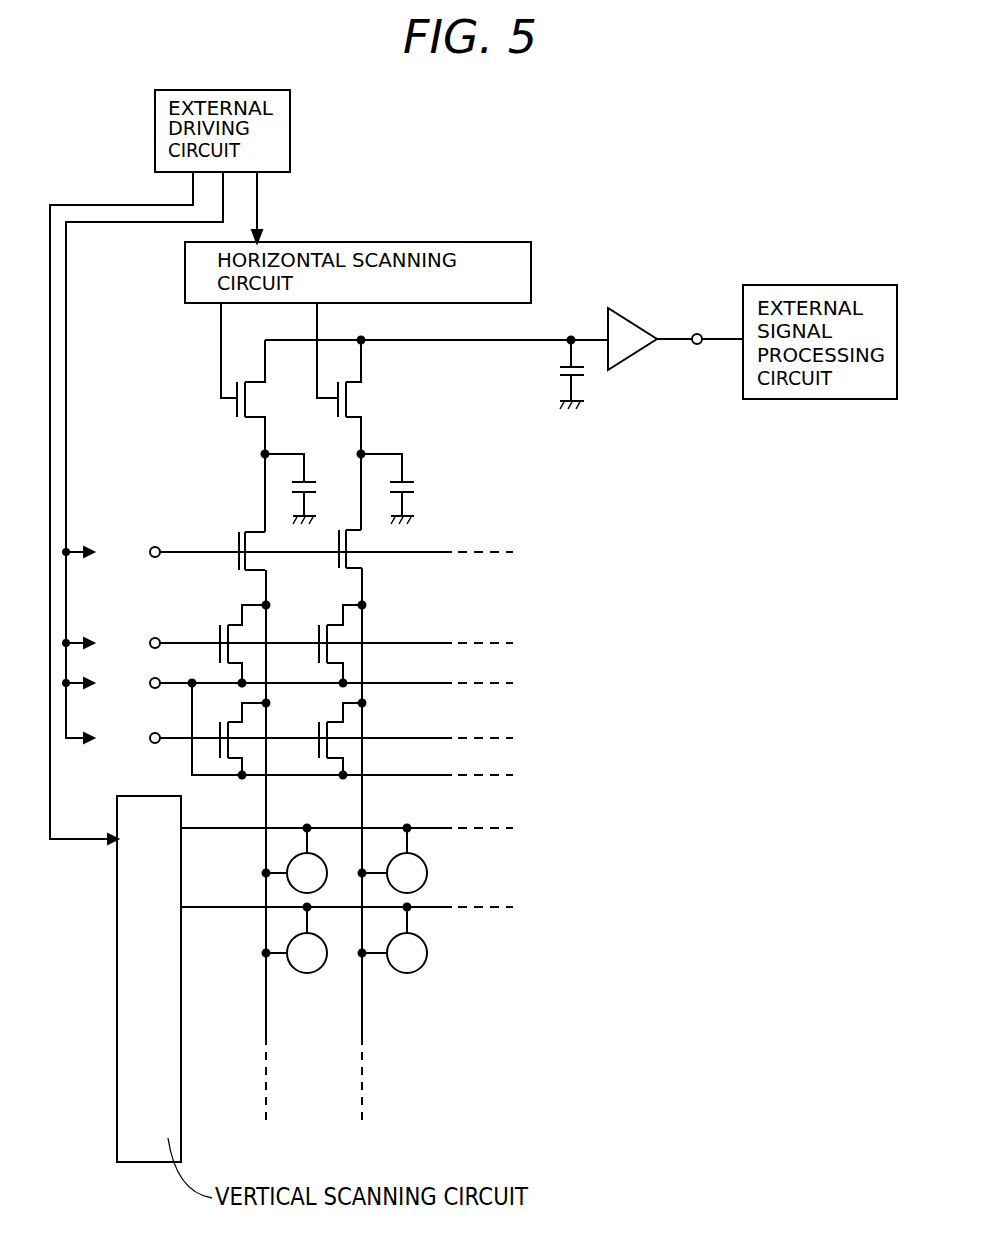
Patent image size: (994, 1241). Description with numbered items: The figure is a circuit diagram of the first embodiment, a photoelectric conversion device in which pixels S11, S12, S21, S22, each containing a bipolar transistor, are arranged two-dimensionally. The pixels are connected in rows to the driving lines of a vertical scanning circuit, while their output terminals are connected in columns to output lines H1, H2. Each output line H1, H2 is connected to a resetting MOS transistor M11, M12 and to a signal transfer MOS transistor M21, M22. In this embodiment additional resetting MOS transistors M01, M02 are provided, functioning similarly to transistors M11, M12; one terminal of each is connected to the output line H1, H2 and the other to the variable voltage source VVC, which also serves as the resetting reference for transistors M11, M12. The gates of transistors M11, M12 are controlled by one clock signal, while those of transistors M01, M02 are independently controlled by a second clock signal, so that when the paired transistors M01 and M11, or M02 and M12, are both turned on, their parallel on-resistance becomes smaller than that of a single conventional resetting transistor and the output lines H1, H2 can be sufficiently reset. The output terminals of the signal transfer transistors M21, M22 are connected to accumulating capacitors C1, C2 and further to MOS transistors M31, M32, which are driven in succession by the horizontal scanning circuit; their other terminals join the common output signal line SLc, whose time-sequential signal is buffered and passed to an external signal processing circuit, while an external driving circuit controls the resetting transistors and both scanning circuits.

The MOS transistor M31 is at (268, 397).
The MOS transistor M32 is at (369, 397).
The signal transfer MOS transistor M21 is at (242, 535).
The signal transfer MOS transistor M22 is at (341, 534).
The resetting MOS transistor M11 is at (239, 641).
The resetting MOS transistor M12 is at (333, 641).
The resetting MOS transistor M01 is at (239, 736).
The resetting MOS transistor M02 is at (331, 736).
The accumulating capacitor C1 is at (298, 488).
The accumulating capacitor C2 is at (402, 488).
The pixel S11 is at (295, 859).
The pixel S12 is at (393, 859).
The pixel S21 is at (295, 939).
The pixel S22 is at (393, 939).
The output line H1 is at (281, 846).
The output line H2 is at (378, 845).
The common output signal line SLc is at (505, 341).
The variable voltage source VVC is at (308, 684).